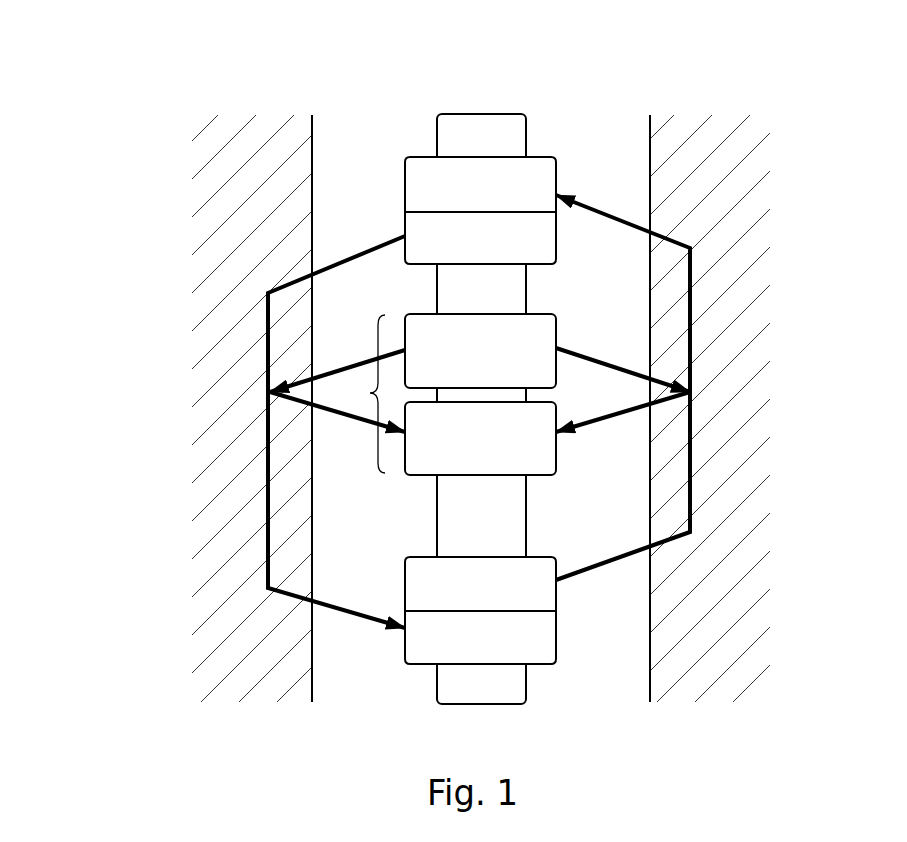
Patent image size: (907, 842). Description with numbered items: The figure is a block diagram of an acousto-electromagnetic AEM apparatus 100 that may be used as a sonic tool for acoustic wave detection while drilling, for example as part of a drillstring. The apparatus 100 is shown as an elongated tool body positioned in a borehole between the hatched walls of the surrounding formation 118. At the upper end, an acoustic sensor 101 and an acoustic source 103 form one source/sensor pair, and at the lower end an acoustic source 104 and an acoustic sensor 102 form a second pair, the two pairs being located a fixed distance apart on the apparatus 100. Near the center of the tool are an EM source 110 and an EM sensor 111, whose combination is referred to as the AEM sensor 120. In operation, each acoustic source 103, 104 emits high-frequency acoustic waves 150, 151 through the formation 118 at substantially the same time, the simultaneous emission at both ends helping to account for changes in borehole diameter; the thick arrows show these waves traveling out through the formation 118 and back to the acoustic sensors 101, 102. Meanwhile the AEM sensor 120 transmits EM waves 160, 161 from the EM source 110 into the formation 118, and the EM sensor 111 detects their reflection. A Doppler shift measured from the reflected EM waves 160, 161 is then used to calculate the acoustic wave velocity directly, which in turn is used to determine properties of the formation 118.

The AEM apparatus 100 is at (534, 64).
The acoustic sensor 101 is at (534, 156).
The acoustic sensor 102 is at (534, 665).
The acoustic source 103 is at (556, 239).
The acoustic source 104 is at (556, 599).
The EM source 110 is at (534, 314).
The EM sensor 111 is at (534, 476).
The formation 118 is at (733, 550).
The AEM sensor 120 is at (357, 394).
The acoustic wave 150 is at (266, 320).
The acoustic wave 151 is at (691, 313).
The EM wave 160 is at (355, 365).
The EM wave 161 is at (607, 364).